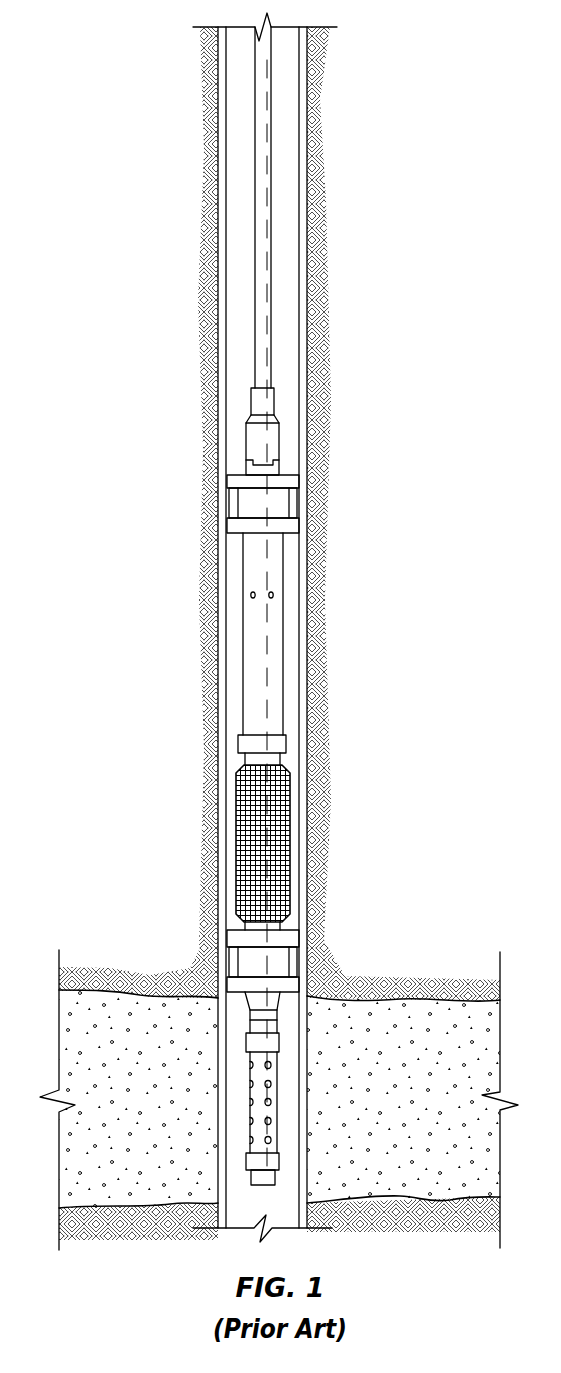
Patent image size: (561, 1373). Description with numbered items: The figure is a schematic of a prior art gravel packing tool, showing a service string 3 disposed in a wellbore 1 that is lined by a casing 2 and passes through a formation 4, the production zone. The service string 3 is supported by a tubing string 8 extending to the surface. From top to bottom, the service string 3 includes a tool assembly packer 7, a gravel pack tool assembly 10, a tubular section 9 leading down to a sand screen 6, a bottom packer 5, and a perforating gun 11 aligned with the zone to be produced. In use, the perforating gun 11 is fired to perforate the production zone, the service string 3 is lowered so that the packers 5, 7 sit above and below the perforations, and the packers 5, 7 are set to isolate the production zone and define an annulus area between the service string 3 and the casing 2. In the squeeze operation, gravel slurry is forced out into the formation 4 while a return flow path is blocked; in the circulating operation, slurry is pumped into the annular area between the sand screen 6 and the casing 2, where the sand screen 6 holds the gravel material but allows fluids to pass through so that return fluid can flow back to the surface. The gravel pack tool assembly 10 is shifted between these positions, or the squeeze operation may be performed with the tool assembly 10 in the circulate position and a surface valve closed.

The wellbore 1 is at (290, 273).
The casing 2 is at (222, 325).
The service string 3 is at (340, 526).
The formation 4 is at (389, 1033).
The bottom packer 5 is at (257, 963).
The sand screen 6 is at (260, 830).
The tool assembly packer 7 is at (263, 507).
The tubing string 8 is at (260, 215).
The tubing section 9 is at (287, 638).
The gravel pack tool assembly 10 is at (286, 453).
The perforating gun 11 is at (262, 1105).